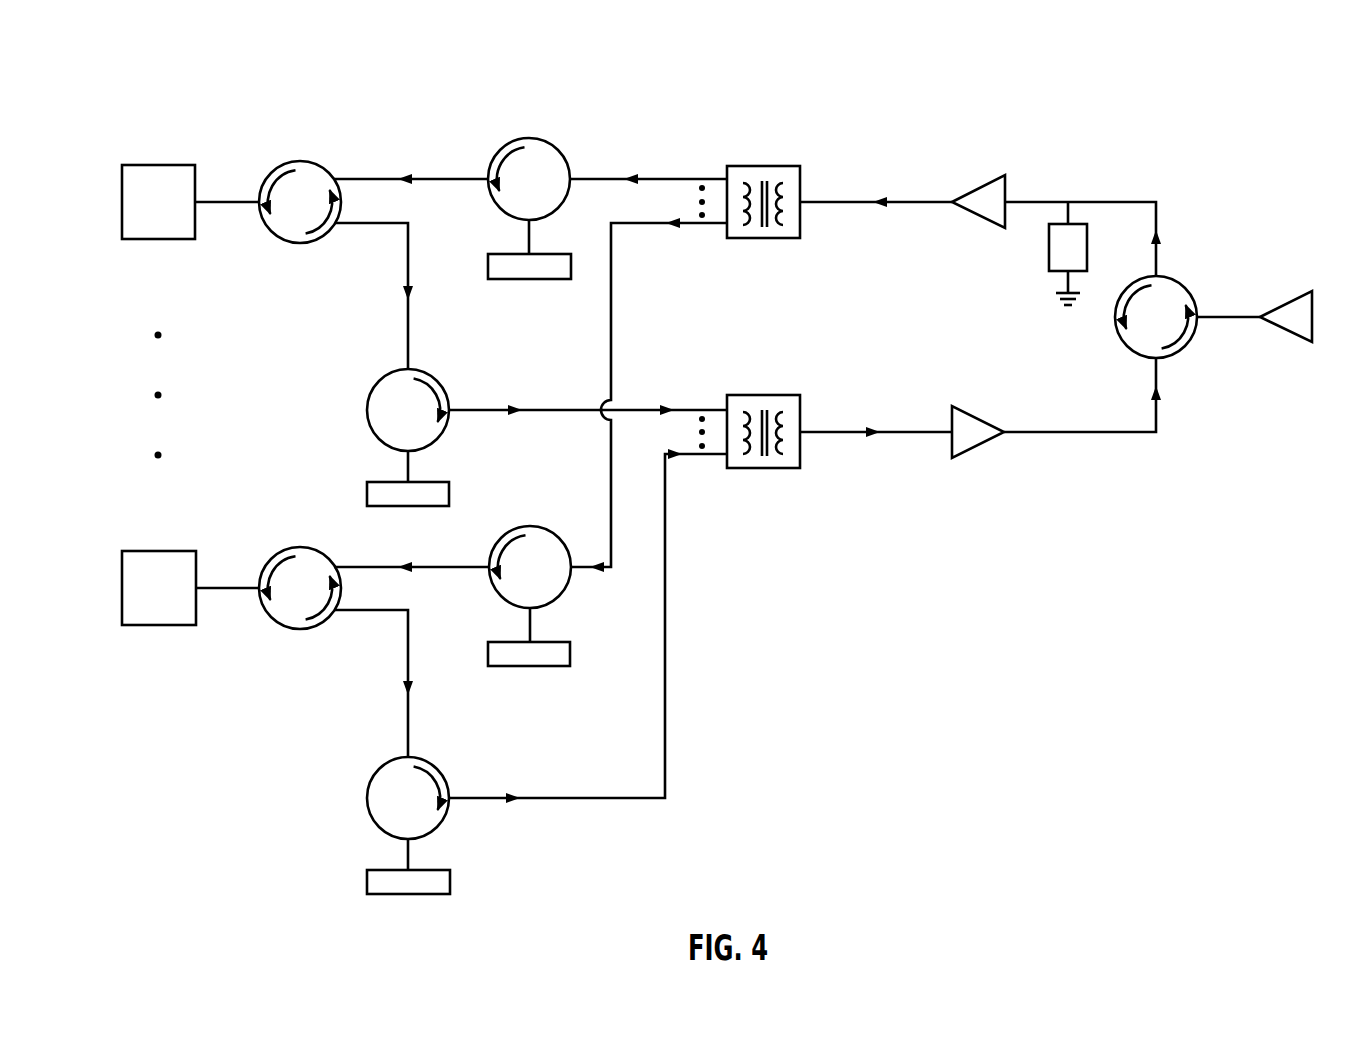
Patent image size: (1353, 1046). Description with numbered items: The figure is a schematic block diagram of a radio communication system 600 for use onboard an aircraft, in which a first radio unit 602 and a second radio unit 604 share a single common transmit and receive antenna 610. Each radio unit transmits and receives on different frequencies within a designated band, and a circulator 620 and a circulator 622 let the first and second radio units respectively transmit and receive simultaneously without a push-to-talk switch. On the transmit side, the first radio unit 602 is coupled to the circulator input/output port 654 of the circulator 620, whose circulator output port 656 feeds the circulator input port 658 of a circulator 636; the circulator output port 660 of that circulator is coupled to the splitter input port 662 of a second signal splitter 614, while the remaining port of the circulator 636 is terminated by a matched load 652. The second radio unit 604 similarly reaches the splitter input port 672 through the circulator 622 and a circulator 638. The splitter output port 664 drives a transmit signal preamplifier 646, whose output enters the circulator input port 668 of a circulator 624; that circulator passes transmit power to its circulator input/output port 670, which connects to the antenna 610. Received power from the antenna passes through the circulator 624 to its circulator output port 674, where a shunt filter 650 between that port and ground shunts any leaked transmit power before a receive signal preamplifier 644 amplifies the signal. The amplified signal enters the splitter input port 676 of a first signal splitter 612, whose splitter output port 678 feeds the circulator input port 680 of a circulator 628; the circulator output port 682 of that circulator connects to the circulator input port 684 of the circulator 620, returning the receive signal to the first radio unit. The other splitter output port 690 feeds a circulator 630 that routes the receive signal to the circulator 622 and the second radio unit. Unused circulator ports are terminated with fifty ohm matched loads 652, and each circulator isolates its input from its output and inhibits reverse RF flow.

The radio communication system 600 is at (172, 70).
The first radio unit 602 is at (158, 165).
The second radio unit 604 is at (158, 551).
The common transmit and receive antenna 610 is at (1300, 290).
The first signal splitter 612 is at (762, 166).
The second signal splitter 614 is at (762, 394).
The circulator 620 is at (300, 160).
The circulator 622 is at (300, 547).
The circulator 624 is at (1116, 318).
The circulator 628 is at (529, 138).
The circulator 630 is at (530, 526).
The circulator 636 is at (367, 410).
The circulator 638 is at (367, 800).
The receive signal preamplifier 644 is at (990, 176).
The transmit signal preamplifier 646 is at (968, 456).
The shunt filter 650 is at (1049, 245).
The matched load 652 is at (530, 280).
The circulator input/output port 654 is at (238, 203).
The circulator output port 656 is at (366, 224).
The circulator input port 658 is at (409, 335).
The circulator output port 660 is at (470, 410).
The splitter input port 662 is at (692, 409).
The splitter output port 664 is at (835, 431).
The circulator input port 668 is at (1158, 378).
The circulator input/output port 670 is at (1243, 318).
The splitter input port 672 is at (695, 455).
The circulator output port 674 is at (1158, 257).
The splitter input port 676 is at (845, 201).
The splitter output port 678 is at (676, 178).
The circulator input port 680 is at (600, 178).
The circulator output port 682 is at (446, 178).
The circulator input port 684 is at (376, 178).
The splitter output port 690 is at (692, 225).